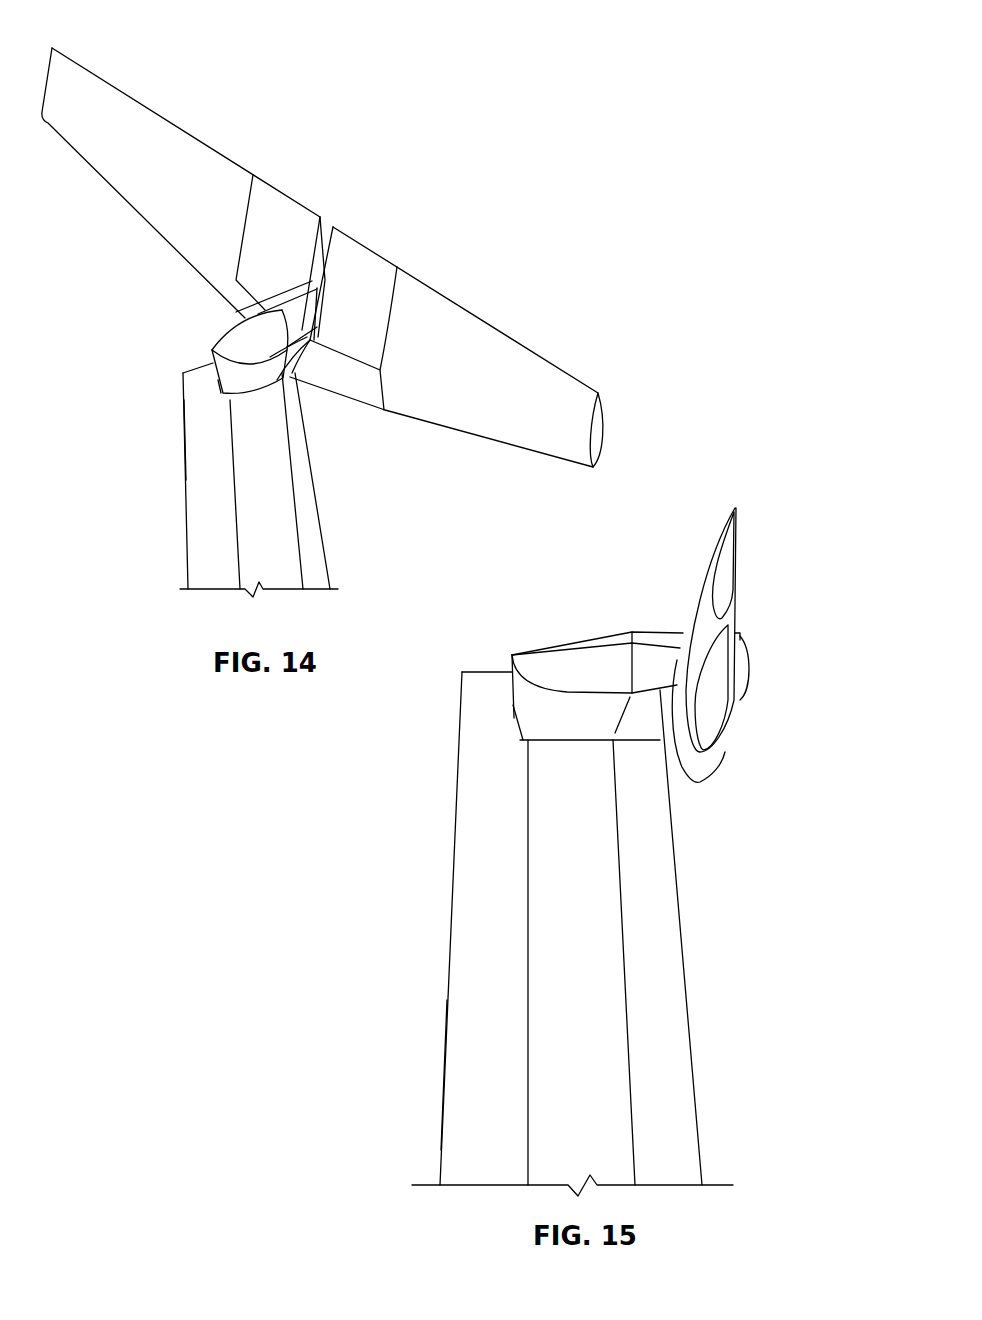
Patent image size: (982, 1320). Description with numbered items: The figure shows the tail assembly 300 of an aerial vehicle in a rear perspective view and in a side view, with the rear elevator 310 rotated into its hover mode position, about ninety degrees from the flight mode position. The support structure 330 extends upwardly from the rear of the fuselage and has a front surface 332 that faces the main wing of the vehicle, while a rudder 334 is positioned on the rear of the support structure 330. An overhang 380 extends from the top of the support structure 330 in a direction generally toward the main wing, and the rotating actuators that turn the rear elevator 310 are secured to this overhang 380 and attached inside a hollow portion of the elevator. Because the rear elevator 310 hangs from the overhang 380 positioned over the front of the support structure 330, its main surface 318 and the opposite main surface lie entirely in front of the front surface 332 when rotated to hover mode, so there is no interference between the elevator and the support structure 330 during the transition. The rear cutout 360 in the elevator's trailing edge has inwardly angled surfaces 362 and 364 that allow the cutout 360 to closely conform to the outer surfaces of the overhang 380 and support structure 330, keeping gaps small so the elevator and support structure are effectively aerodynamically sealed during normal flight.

In FIG. 14, the tail assembly 300 is at (575, 152).
In FIG. 15, the tail assembly 300 is at (775, 1148).
In FIG. 14, the rear elevator 310 is at (448, 333).
In FIG. 15, the rear elevator 310 is at (705, 693).
In FIG. 15, the main surface 318 is at (660, 727).
In FIG. 14, the support structure 330 is at (255, 480).
In FIG. 15, the support structure 330 is at (569, 934).
In FIG. 14, the front surface 332 is at (310, 447).
In FIG. 15, the front surface 332 is at (662, 770).
In FIG. 14, the rudder 334 is at (198, 413).
In FIG. 15, the rudder 334 is at (460, 1123).
In FIG. 14, the cutout 360 is at (332, 212).
In FIG. 14, the inwardly angled surface 362 is at (320, 215).
In FIG. 14, the inwardly angled surface 364 is at (335, 227).
In FIG. 14, the overhang 380 is at (282, 310).
In FIG. 15, the overhang 380 is at (685, 633).